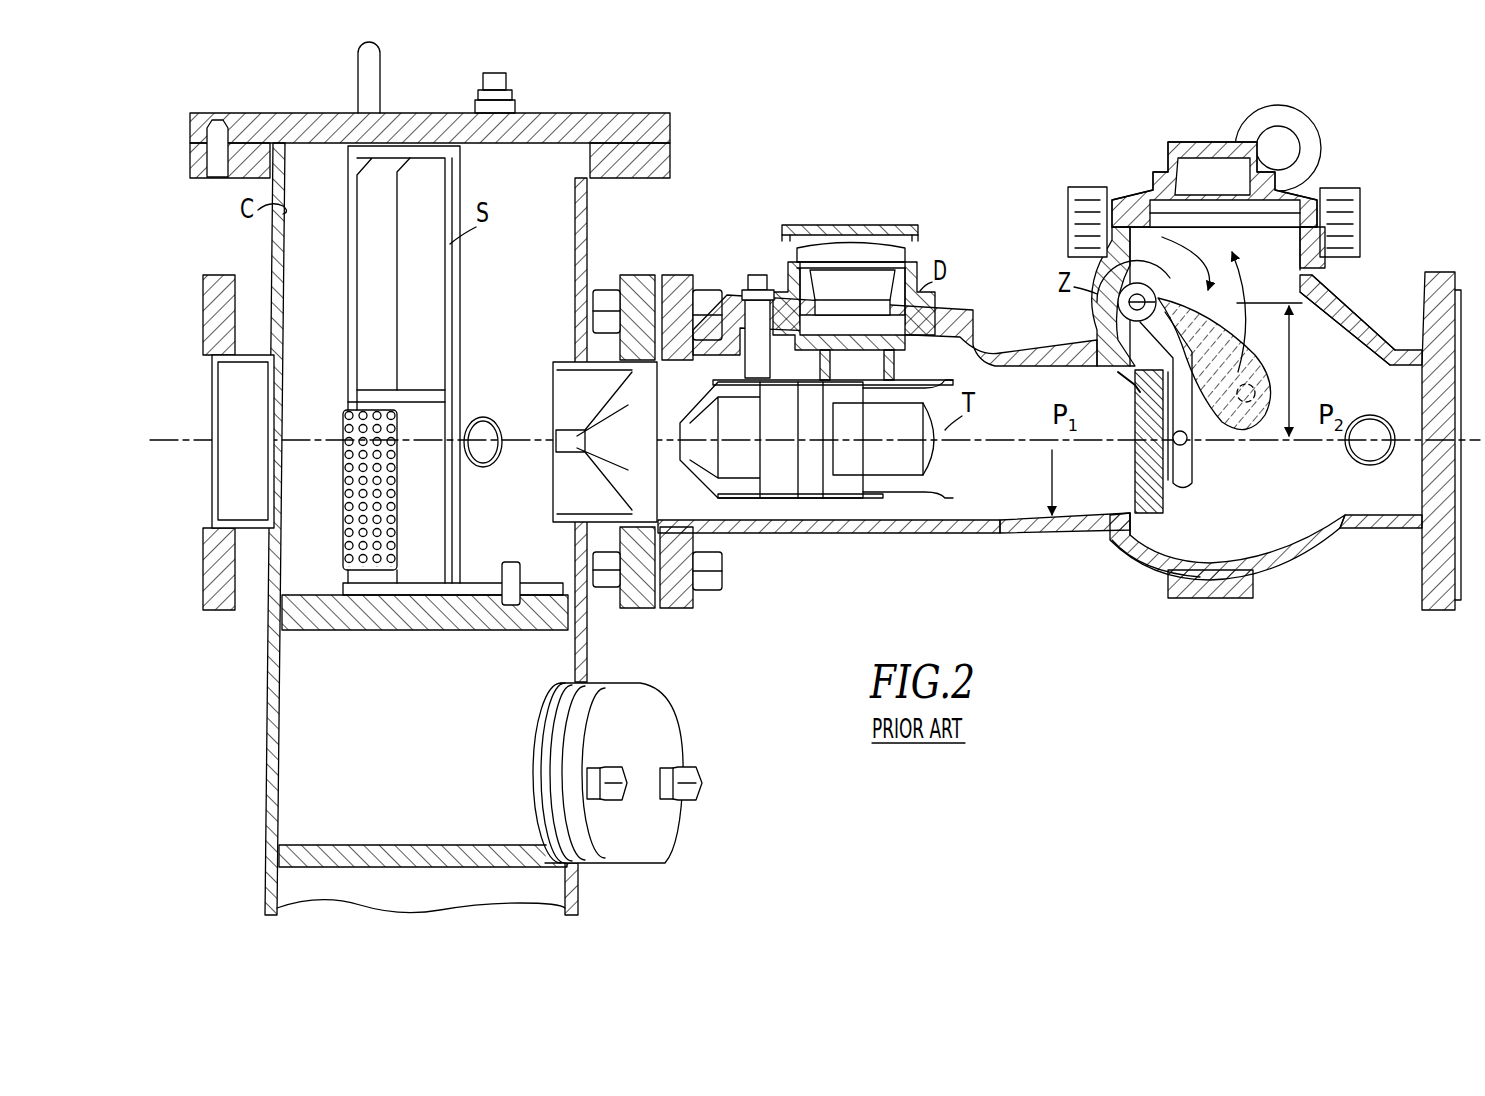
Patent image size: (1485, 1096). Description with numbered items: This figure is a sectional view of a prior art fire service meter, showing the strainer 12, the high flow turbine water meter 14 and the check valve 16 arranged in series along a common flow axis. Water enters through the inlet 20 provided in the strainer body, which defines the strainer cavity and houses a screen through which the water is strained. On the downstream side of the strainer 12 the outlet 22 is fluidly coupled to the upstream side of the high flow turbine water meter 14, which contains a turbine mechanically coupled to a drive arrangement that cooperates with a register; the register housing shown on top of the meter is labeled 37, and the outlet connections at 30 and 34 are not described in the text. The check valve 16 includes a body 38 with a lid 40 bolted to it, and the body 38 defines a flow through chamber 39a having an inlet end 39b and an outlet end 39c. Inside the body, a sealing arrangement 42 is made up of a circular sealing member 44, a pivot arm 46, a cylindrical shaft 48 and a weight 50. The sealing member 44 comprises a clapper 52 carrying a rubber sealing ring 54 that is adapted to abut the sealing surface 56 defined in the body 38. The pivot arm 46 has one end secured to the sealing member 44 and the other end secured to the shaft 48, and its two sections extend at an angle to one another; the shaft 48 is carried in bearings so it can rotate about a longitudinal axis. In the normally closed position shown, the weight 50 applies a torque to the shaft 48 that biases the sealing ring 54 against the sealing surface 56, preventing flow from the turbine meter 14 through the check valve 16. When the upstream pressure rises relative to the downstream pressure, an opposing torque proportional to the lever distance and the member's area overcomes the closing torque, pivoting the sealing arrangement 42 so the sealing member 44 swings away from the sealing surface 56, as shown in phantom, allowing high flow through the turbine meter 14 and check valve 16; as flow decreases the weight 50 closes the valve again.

The strainer 12 is at (548, 113).
The inlet 20 is at (216, 275).
The outlet 22 is at (590, 250).
The high flow turbine water meter 14 is at (968, 312).
The meter register 37 is at (835, 225).
The lid 40 is at (1126, 190).
The cylindrical shaft 48 is at (1138, 283).
The sealing arrangement 42 is at (1228, 352).
The weight 50 is at (1290, 343).
The rubber sealing ring 54 is at (1118, 374).
The circular sealing member 44 is at (1165, 488).
The pivot arm 46 is at (1186, 443).
The inlet end 39b is at (1075, 503).
The flow through chamber 39a is at (1272, 528).
The sealing surface 56 is at (1106, 536).
The clapper 52 is at (1150, 518).
The outlet end 39c is at (1353, 515).
The body 38 is at (1318, 302).
The check valve 16 is at (1350, 322).
The outlet neck 30 is at (1372, 336).
The outlet flange 34 is at (1450, 273).